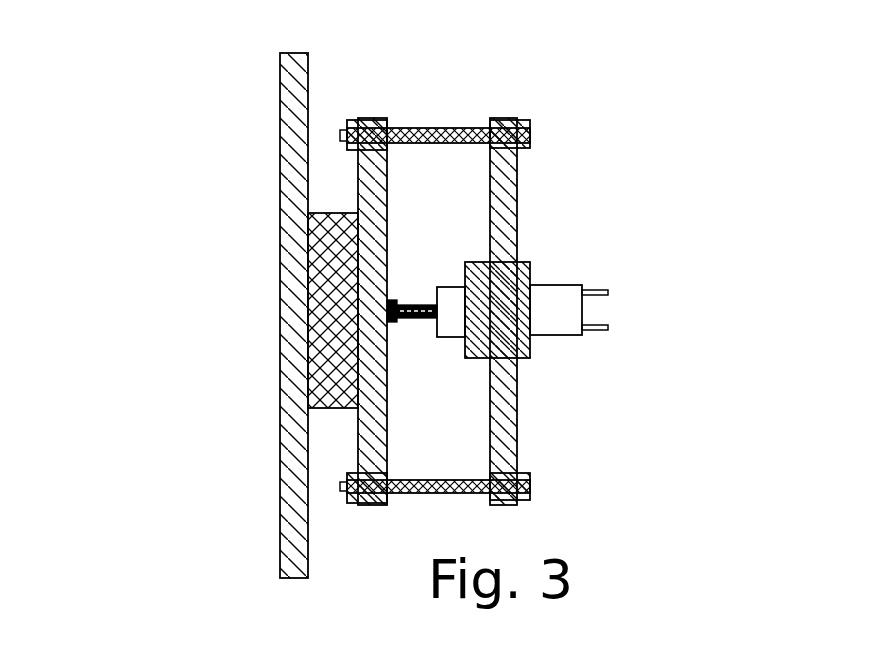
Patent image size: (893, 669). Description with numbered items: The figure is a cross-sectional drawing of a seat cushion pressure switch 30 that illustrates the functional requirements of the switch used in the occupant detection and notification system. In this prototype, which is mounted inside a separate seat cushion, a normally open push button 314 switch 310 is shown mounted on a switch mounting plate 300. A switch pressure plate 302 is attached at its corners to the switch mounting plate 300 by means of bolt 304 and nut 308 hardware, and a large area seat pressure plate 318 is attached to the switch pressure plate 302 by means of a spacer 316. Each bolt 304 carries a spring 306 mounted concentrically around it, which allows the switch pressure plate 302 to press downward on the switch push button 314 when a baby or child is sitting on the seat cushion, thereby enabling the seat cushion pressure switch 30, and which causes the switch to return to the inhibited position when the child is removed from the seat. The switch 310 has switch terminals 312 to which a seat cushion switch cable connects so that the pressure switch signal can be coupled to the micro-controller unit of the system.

The seat cushion pressure switch 30 is at (175, 85).
The switch mounting plate 300 is at (522, 279).
The switch pressure plate 302 is at (380, 192).
The bolt 304 is at (532, 128).
The spring 306 is at (423, 130).
The nut 308 is at (350, 124).
The switch 310 is at (572, 337).
The switch terminals 312 is at (610, 292).
The push button 314 is at (413, 318).
The spacer 316 is at (335, 213).
The seat pressure plate 318 is at (278, 337).